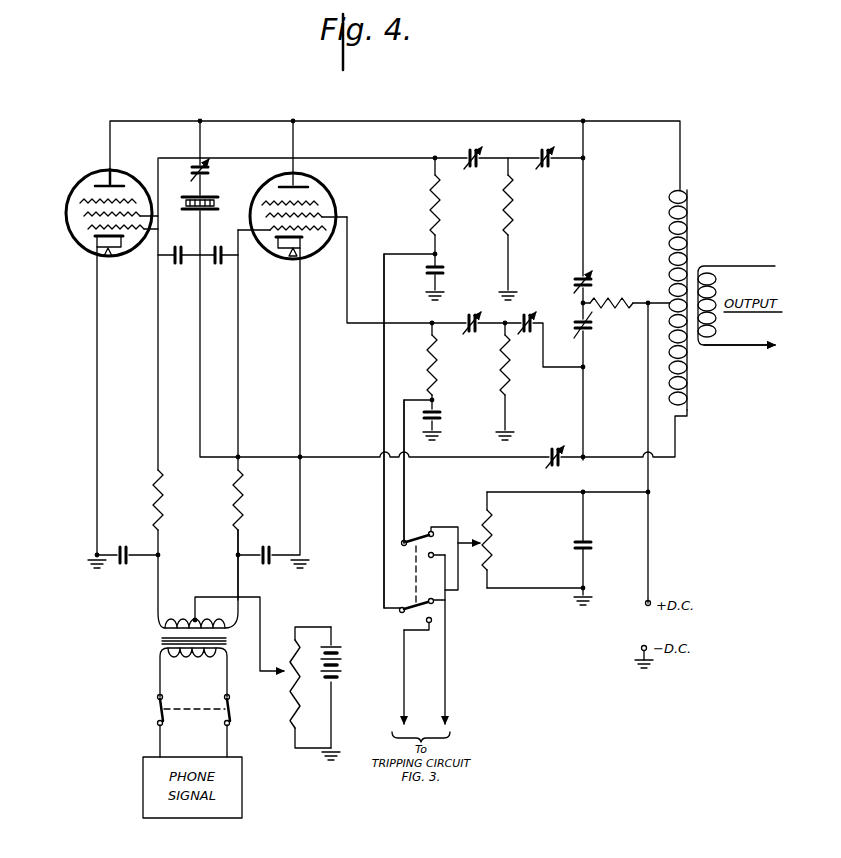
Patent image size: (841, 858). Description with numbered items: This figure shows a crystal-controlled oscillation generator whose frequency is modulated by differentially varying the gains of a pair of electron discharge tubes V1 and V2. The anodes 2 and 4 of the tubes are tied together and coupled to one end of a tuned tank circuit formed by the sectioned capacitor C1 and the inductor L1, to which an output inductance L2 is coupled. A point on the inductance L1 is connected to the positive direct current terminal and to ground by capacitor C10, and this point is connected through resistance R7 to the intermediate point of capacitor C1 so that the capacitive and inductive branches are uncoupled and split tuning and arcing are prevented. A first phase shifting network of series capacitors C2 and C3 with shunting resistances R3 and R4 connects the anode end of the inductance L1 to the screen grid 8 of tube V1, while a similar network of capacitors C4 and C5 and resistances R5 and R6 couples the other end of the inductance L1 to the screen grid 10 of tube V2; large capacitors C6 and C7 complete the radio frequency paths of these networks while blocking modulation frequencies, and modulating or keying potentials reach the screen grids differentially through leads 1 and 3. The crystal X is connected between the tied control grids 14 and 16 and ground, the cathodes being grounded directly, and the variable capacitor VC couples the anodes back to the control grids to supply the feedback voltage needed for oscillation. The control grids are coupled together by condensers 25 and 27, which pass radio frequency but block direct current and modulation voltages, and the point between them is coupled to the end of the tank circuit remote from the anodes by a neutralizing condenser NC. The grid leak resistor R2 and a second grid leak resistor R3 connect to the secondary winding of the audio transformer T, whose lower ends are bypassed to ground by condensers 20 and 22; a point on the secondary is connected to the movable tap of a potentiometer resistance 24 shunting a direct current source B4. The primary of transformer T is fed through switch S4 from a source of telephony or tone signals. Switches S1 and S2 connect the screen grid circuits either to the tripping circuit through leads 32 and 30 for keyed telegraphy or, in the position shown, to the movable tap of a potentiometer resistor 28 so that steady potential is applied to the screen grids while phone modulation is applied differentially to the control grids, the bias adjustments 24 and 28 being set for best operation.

The electron discharge tube V1 is at (96, 207).
The anode 2 is at (112, 182).
The screen grid 8 is at (84, 216).
The control grid 14 is at (92, 243).
The variable capacitor VC is at (212, 170).
The crystal X is at (215, 203).
The condenser 25 is at (178, 268).
The condenser 27 is at (218, 268).
The electron discharge tube V2 is at (301, 225).
The anode 4 is at (305, 182).
The screen grid 10 is at (318, 218).
The control grid 16 is at (311, 244).
The second grid leak resistor R3 is at (430, 205).
The series capacitor C2 is at (472, 170).
The series capacitor C3 is at (546, 170).
The shunting resistance R4 is at (503, 208).
The capacitor C6 is at (444, 272).
The capacitor C1 is at (591, 284).
The resistance R7 is at (634, 290).
The inductor L1 is at (688, 222).
The inductance L2 is at (710, 276).
The resistance R5 is at (428, 372).
The capacitor C4 is at (471, 337).
The capacitor C5 is at (530, 337).
The resistance R6 is at (500, 380).
The capacitor C7 is at (444, 416).
The lead 1 is at (380, 434).
The lead 3 is at (404, 434).
The neutralizing condenser NC is at (565, 432).
The grid leak resistor R2 is at (162, 512).
The radio frequency bypassing condenser 20 is at (121, 546).
The radio frequency bypassing condenser 22 is at (267, 546).
The audio transformer T is at (158, 637).
The switch S4 is at (156, 708).
The potentiometer resistance 24 is at (292, 684).
The source of direct current potential B4 is at (341, 672).
The switch S2 is at (416, 532).
The switch S1 is at (397, 606).
The potentiometer resistor 28 is at (492, 548).
The capacitor C10 is at (592, 547).
The lead 32 is at (405, 694).
The lead 30 is at (446, 694).